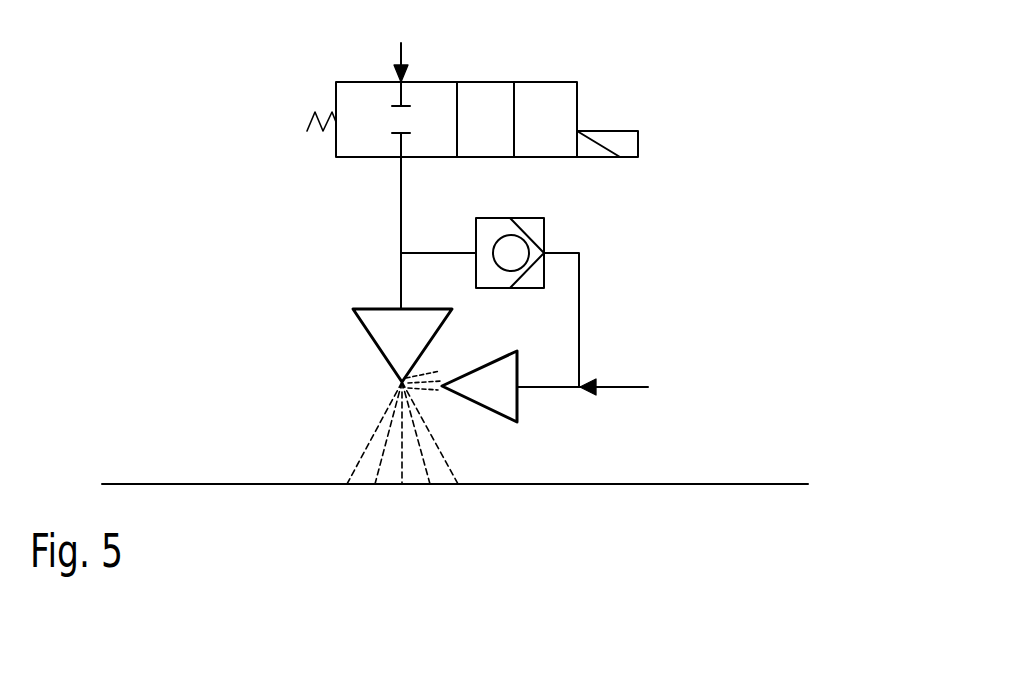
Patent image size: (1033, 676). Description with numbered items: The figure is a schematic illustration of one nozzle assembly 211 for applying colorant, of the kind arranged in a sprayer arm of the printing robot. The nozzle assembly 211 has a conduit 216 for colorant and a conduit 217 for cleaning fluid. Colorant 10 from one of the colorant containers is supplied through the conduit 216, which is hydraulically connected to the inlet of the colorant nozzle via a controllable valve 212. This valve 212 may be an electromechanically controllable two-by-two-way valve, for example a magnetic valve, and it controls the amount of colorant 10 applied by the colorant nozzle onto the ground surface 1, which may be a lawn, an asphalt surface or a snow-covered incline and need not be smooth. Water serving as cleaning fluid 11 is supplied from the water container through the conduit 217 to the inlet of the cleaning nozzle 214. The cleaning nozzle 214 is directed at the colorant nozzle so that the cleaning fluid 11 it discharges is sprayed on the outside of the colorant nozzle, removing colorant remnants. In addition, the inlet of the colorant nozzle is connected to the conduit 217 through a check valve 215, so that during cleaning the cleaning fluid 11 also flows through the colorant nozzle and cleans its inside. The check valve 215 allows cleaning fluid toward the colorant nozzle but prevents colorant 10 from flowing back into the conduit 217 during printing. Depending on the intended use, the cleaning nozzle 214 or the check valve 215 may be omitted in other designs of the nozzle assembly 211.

The ground surface 1 is at (808, 484).
The colorant 10 is at (387, 430).
The cleaning fluid 11 is at (427, 395).
The nozzle assembly 211 is at (170, 160).
The valve 212 is at (360, 82).
The cleaning nozzle 214 is at (519, 405).
The check valve 215 is at (547, 230).
The conduit for colorant 216 is at (402, 55).
The conduit for cleaning fluid 217 is at (628, 387).